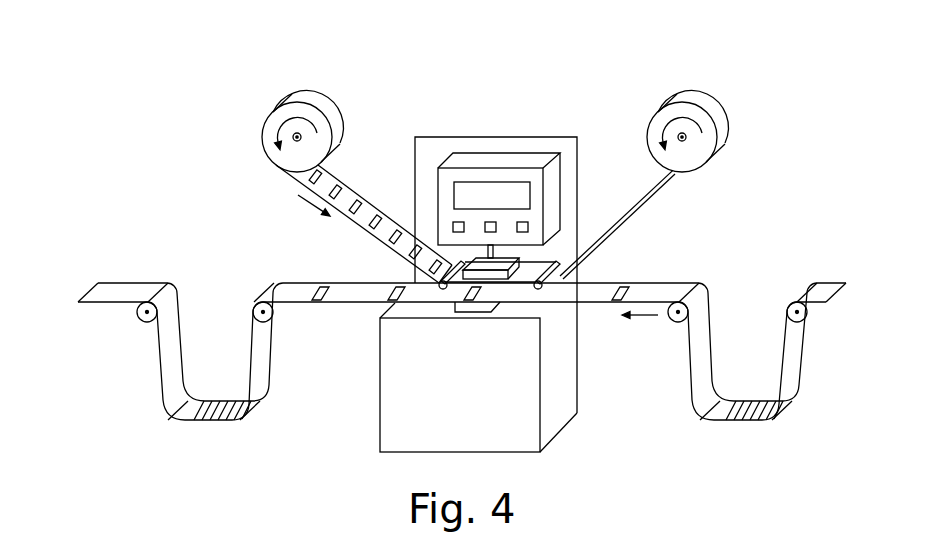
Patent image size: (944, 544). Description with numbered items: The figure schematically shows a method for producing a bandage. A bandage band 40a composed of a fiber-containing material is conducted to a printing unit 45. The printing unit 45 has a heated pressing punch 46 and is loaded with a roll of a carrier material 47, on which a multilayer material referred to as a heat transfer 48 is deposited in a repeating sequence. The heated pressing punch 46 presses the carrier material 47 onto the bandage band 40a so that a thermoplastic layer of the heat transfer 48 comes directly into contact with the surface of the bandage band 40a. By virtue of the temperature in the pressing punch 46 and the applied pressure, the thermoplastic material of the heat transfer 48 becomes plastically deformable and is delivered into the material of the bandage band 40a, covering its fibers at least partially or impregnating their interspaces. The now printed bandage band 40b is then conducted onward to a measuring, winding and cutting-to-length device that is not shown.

The bandage band 40a is at (703, 333).
The printed bandage band 40b is at (293, 293).
The printing unit 45 is at (562, 143).
The heated pressing punch 46 is at (535, 263).
The roll of carrier material 47 is at (318, 118).
The heat transfer 48 is at (355, 197).